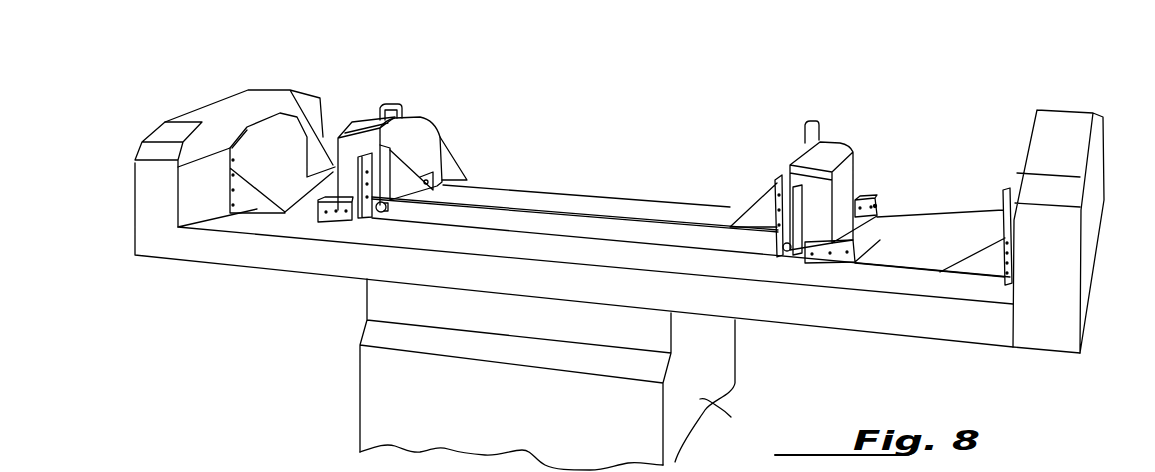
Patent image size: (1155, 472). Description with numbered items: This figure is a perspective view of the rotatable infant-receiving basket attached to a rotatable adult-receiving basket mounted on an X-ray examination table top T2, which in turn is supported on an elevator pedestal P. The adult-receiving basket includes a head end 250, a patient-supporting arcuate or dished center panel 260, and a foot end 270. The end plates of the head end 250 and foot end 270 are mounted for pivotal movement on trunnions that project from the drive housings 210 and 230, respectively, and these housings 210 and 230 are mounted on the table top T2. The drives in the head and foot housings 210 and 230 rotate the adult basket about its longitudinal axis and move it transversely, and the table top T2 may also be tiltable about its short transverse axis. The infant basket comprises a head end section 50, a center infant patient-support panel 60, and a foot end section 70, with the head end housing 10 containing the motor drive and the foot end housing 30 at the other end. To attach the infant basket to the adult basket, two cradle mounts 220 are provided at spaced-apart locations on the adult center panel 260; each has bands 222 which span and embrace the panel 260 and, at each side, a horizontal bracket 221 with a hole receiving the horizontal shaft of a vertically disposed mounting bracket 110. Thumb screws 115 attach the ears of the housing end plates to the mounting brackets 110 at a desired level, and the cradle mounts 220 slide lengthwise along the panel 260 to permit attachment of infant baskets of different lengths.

The housing 10 is at (430, 108).
The end housing 30 is at (850, 128).
The head end section 50 is at (450, 137).
The center infant patient-support panel 60 is at (540, 195).
The foot end section 70 is at (776, 156).
The mounting bracket 110 is at (358, 172).
The thumb screw 115 is at (386, 212).
The drive housing 210 is at (267, 80).
The cradle mount 220 is at (331, 233).
The horizontal bracket 221 is at (878, 205).
The band 222 is at (870, 228).
The drive housing 230 is at (1063, 96).
The head end 250 is at (293, 130).
The center panel 260 is at (650, 237).
The foot end 270 is at (1002, 183).
The table top T2 is at (872, 339).
The elevator pedestal P is at (550, 374).